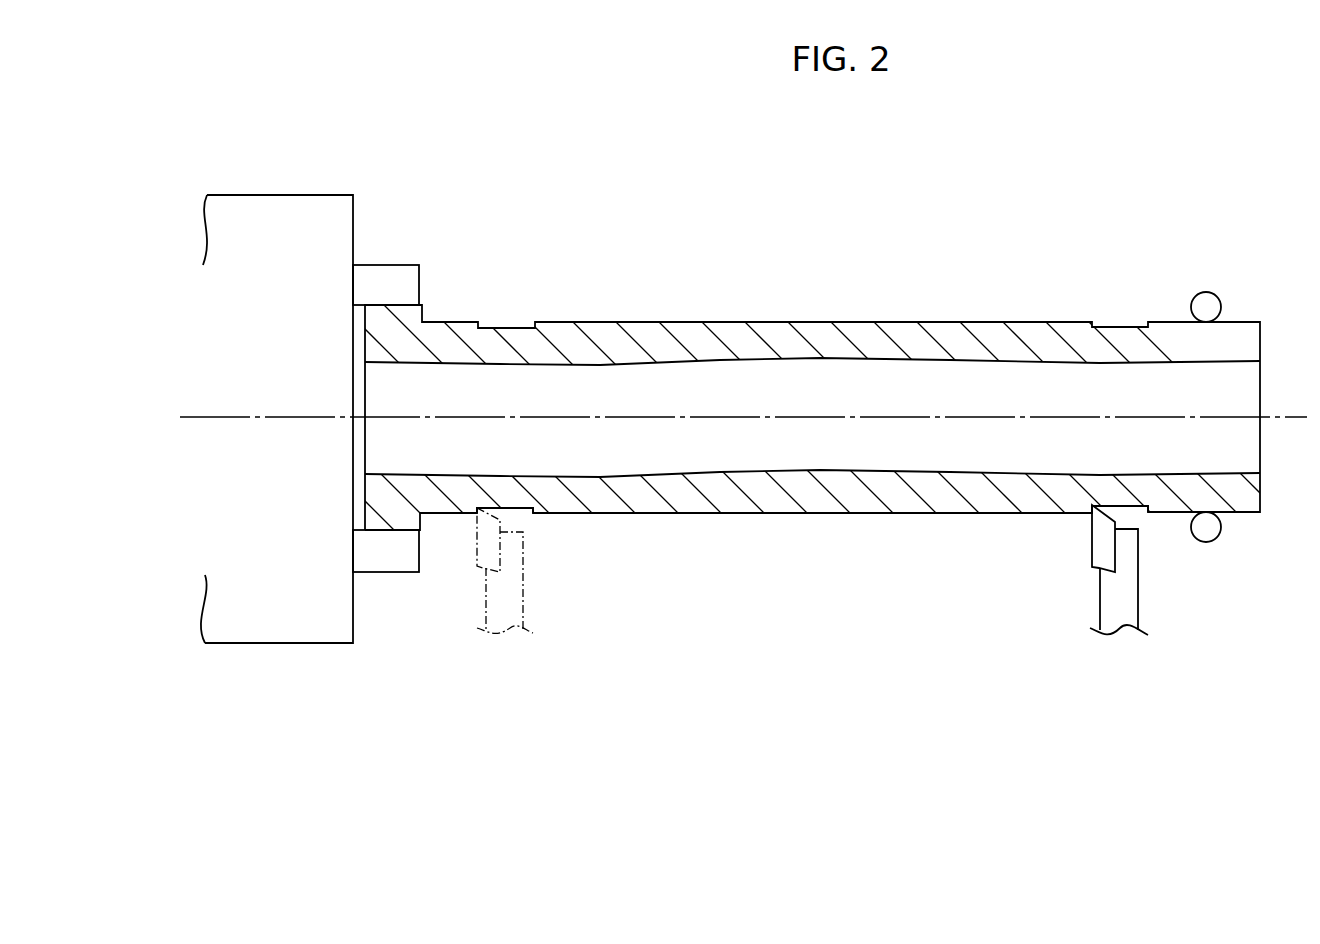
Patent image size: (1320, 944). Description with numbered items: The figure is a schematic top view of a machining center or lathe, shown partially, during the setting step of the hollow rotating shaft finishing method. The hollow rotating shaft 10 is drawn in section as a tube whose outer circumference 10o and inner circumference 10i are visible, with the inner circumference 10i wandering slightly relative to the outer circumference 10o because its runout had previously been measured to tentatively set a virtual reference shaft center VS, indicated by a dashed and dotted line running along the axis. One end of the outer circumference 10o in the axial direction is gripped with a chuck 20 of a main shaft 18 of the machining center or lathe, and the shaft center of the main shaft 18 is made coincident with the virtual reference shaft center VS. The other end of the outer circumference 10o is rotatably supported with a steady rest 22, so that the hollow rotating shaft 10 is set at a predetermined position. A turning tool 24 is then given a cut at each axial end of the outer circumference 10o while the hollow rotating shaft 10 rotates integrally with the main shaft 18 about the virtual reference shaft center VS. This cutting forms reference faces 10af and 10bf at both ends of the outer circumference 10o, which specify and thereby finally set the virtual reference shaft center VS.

The hollow rotating shaft 10 is at (718, 406).
The outer circumference 10o is at (655, 322).
The inner circumference 10i is at (620, 477).
The reference face 10af is at (523, 512).
The reference face 10bf is at (1135, 510).
The main shaft 18 is at (276, 198).
The chuck 20 is at (395, 268).
The steady rest 22 is at (1207, 291).
The turning tool 24 is at (486, 605).
The virtual reference shaft center VS is at (1290, 413).